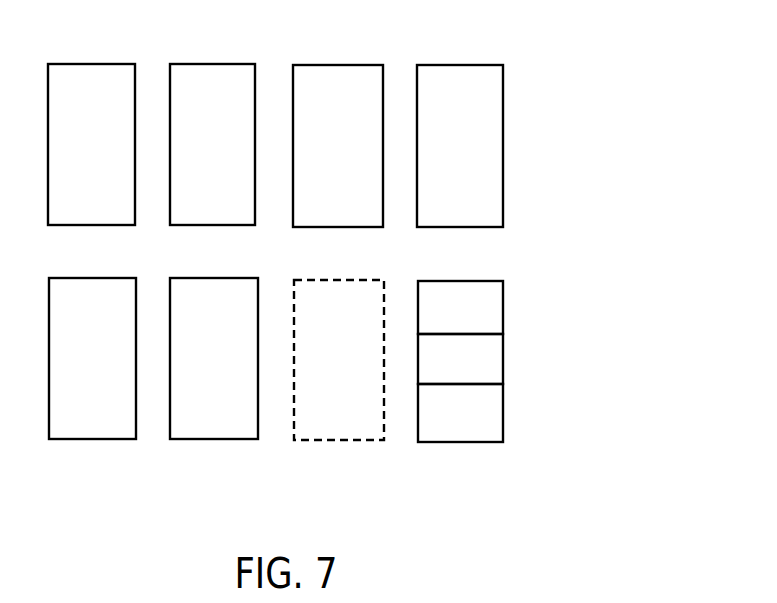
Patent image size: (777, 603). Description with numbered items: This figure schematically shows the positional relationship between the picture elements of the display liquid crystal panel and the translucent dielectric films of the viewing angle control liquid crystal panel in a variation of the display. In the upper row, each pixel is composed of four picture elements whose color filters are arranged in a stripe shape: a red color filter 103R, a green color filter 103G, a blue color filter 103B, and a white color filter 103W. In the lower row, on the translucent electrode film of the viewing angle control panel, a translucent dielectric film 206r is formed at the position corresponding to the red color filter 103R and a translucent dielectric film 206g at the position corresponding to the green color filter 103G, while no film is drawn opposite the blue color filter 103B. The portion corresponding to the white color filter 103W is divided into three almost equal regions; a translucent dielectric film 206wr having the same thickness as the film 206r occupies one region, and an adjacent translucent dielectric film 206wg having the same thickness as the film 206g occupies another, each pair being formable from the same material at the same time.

The red color filter 103R is at (69, 74).
The green color filter 103G is at (190, 75).
The blue color filter 103B is at (314, 76).
The white color filter 103W is at (438, 75).
The translucent dielectric film 206r is at (93, 425).
The translucent dielectric film 206g is at (210, 425).
The translucent dielectric film 206wr is at (494, 311).
The translucent dielectric film 206wg is at (497, 362).